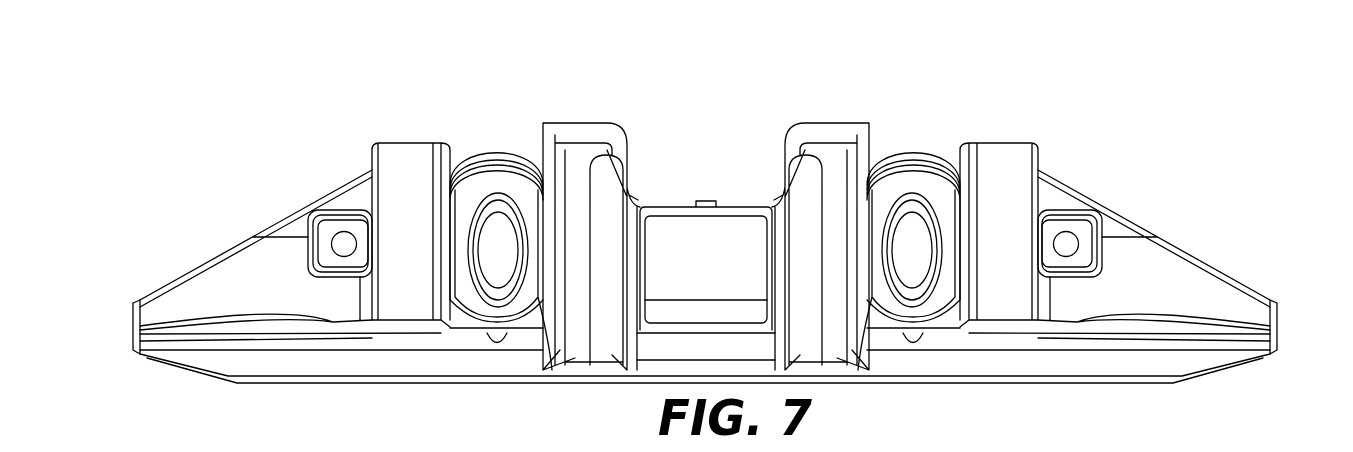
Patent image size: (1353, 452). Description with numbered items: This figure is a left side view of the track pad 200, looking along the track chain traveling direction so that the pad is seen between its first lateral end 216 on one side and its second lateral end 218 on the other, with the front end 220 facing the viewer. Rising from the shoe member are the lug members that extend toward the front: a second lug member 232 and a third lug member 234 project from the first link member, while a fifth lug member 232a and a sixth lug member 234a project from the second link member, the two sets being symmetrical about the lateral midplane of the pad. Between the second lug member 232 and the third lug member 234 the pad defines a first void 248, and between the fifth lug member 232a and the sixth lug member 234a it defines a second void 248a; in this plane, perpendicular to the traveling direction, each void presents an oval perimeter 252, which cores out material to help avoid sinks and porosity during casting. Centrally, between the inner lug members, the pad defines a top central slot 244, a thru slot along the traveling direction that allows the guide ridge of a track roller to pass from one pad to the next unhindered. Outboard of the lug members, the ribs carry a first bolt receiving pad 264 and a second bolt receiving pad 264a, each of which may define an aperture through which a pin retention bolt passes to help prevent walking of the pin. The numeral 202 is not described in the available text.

The track pad 200 is at (722, 241).
The body 202 is at (875, 128).
The first lateral end 216 is at (1274, 323).
The second lateral end 218 is at (136, 306).
The front end 220 is at (1047, 333).
The second lug member 232 is at (823, 162).
The fifth lug member 232a is at (587, 160).
The third lug member 234 is at (990, 180).
The sixth lug member 234a is at (397, 185).
The top central slot 244 is at (661, 166).
The first void 248 is at (904, 233).
The second void 248a is at (498, 235).
The oval perimeter 252 is at (488, 281).
The first bolt receiving pad 264 is at (1083, 255).
The second bolt receiving pad 264a is at (331, 238).